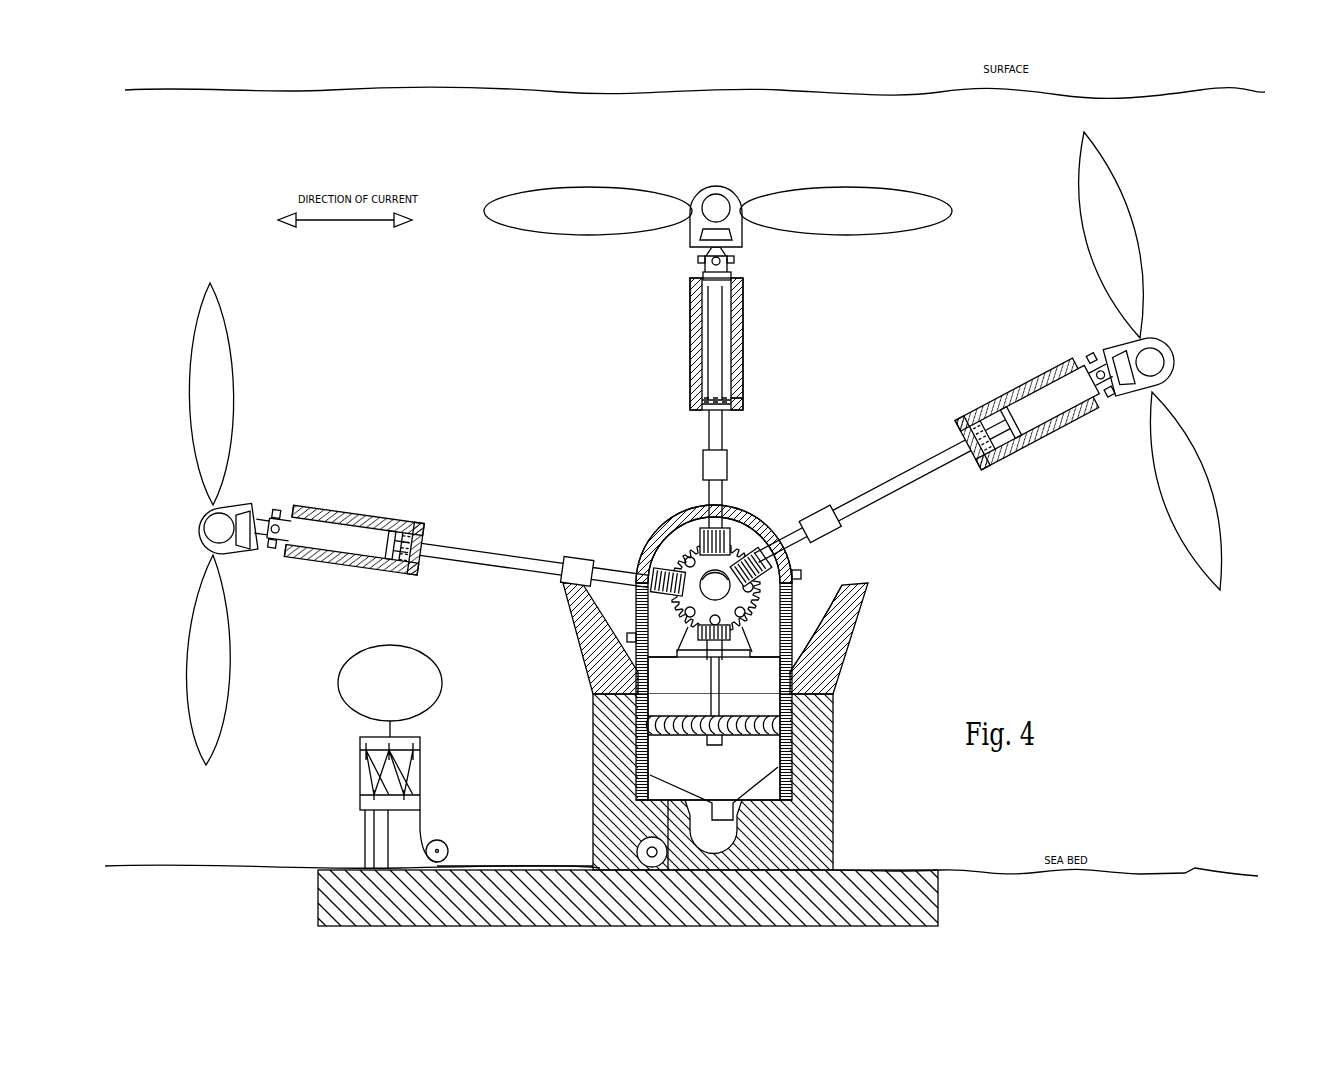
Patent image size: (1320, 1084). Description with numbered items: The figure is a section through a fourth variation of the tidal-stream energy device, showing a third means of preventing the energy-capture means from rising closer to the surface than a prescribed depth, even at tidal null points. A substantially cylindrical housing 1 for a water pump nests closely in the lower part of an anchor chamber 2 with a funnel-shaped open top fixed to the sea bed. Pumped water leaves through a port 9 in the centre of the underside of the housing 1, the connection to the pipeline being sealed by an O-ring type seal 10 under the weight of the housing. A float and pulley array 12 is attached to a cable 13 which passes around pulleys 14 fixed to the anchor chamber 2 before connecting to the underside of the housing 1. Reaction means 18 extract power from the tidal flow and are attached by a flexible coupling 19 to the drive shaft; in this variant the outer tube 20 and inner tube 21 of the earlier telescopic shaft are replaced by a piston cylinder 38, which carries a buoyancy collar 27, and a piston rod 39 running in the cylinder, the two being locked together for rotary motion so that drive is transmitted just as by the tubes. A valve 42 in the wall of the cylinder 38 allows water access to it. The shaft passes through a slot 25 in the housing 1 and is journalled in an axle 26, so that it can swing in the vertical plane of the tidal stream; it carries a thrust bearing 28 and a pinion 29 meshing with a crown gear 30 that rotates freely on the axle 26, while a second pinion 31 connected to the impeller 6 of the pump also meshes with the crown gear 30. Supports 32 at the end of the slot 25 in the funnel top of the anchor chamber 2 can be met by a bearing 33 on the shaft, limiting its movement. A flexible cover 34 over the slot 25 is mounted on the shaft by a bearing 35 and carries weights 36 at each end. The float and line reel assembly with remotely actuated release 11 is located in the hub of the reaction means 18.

The housing 1 is at (792, 615).
The anchor chamber 2 is at (825, 660).
The impeller 6 is at (636, 727).
The port 9 is at (638, 773).
The O-ring seal 10 is at (833, 716).
The marker float and line reel assembly with remotely actuated release 11 is at (213, 521).
The float and pulley array 12 is at (421, 774).
The cable 13 is at (552, 864).
The pulley 14 is at (448, 838).
The reaction means 18 is at (235, 645).
The flexible coupling 19 is at (264, 512).
The outer tube 20 is at (455, 580).
The inner tube 21 is at (612, 566).
The slot 25 is at (700, 507).
The axle 26 is at (683, 529).
The buoyancy collar 27 is at (340, 508).
The thrust bearing 28 is at (745, 595).
The pinion 29 is at (668, 553).
The crown gear 30 is at (753, 517).
The second pinion 31 is at (636, 675).
The supports 32 is at (570, 590).
The bearing 33 is at (572, 560).
The flexible cover 34 is at (738, 512).
The bearing 35 is at (650, 572).
The weights 36 is at (627, 637).
The piston cylinder 38 is at (345, 553).
The piston rod 39 is at (452, 545).
The valve 42 is at (413, 519).